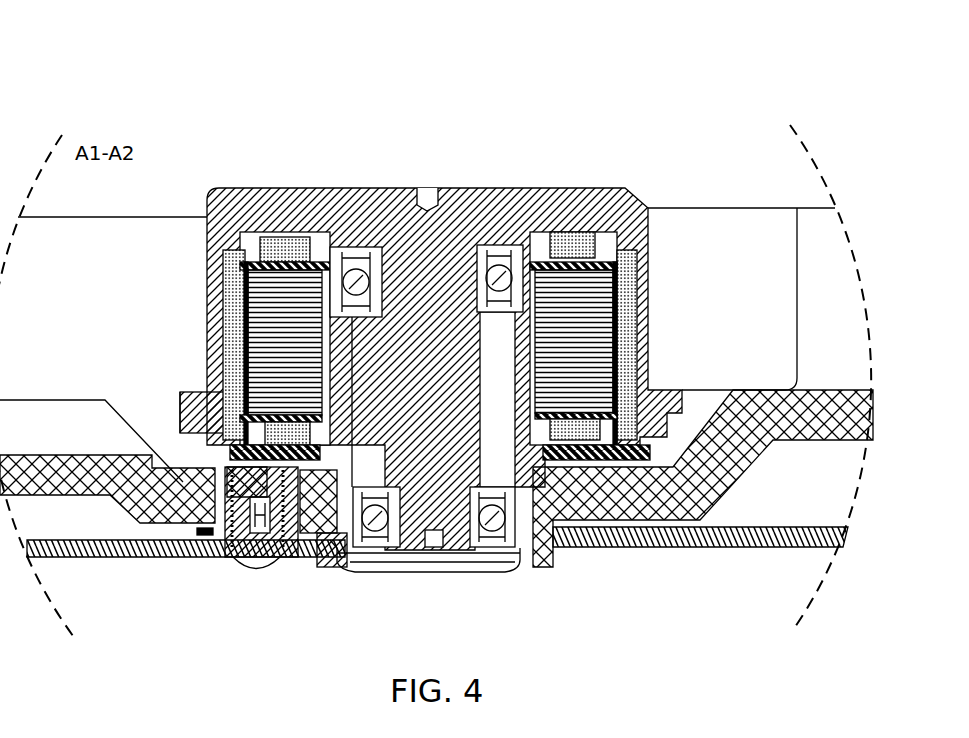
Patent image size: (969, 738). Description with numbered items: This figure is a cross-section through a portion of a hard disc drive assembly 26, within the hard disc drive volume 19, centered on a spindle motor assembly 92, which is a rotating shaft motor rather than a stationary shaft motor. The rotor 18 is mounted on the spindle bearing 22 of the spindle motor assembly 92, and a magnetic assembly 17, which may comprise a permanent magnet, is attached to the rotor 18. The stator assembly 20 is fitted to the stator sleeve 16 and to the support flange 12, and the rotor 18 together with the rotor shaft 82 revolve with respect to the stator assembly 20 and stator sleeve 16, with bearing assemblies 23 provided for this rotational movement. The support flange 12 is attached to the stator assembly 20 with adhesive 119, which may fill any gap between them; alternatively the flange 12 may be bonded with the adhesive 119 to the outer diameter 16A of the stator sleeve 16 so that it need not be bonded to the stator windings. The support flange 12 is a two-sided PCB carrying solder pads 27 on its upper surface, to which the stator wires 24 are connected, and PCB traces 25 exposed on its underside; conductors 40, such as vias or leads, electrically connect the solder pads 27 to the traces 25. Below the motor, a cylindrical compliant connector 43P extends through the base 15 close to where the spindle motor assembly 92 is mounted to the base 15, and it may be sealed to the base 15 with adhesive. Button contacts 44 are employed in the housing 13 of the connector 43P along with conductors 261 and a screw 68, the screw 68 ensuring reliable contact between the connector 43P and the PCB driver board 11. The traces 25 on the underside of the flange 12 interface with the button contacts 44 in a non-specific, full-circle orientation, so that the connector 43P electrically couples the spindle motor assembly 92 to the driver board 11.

The PCB driver board 11 is at (124, 557).
The support flange 12 is at (633, 460).
The housing 13 is at (300, 555).
The base 15 is at (50, 497).
The stator sleeve 16 is at (350, 404).
The outer diameter 16A is at (367, 402).
The magnetic assembly 17 is at (229, 322).
The rotor 18 is at (246, 207).
The hard disc drive volume 19 is at (112, 246).
The stator assembly 20 is at (280, 320).
The spindle bearing 22 is at (433, 552).
The bearing assemblies 23 is at (363, 323).
The stator wires 24 is at (207, 388).
The PCB traces 25 is at (583, 460).
The hard disc drive assembly 26 is at (71, 32).
The solder pads 27 is at (180, 395).
The conductors 40 is at (214, 450).
The connector 43P is at (200, 532).
The button contacts 44 is at (231, 553).
The screw 68 is at (259, 570).
The rotor shaft 82 is at (497, 399).
The spindle motor assembly 92 is at (662, 262).
The adhesive 119 is at (607, 432).
The conductors 261 is at (336, 560).